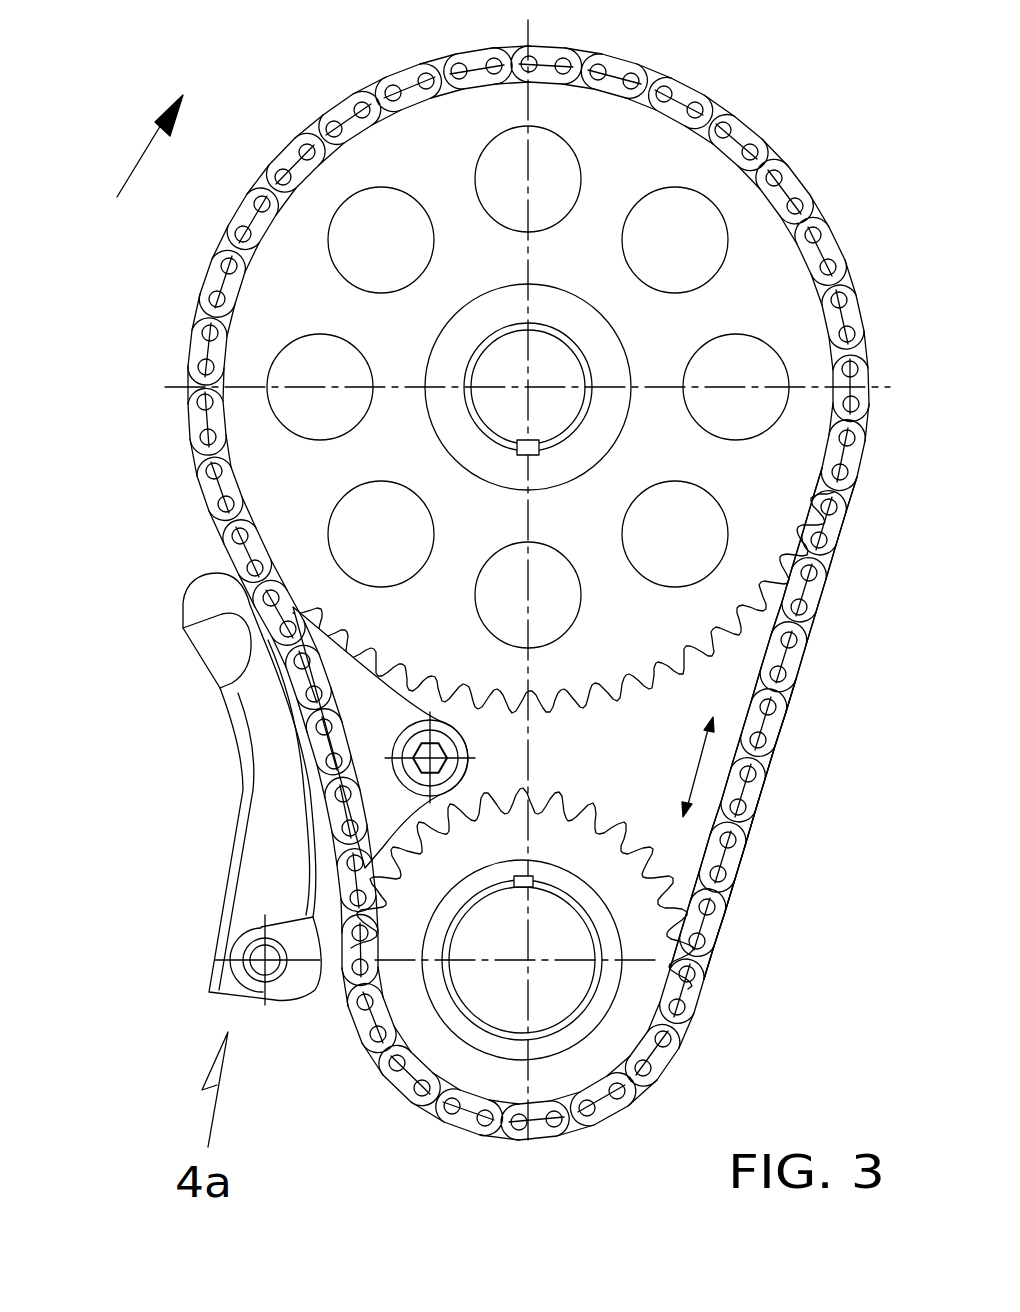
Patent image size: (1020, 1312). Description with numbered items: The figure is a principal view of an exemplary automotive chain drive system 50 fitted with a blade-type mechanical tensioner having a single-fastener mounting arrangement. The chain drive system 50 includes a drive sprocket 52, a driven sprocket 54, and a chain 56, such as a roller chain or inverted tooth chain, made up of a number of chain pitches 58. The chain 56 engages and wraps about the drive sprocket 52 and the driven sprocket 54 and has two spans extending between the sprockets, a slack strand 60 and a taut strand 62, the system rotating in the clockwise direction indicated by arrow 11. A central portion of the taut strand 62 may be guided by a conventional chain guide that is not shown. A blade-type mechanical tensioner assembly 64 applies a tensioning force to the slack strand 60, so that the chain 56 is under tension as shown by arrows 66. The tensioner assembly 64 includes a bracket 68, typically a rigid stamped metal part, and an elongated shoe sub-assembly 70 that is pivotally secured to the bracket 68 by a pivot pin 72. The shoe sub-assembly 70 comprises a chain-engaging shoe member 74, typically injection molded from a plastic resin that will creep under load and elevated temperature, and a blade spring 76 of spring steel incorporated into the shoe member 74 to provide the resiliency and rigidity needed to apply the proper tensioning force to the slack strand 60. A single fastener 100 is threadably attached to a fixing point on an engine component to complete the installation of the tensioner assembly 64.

The arrow 11 is at (133, 167).
The chain drive system 50 is at (812, 112).
The drive sprocket 52 is at (603, 826).
The driven sprocket 54 is at (584, 696).
The chain 56 is at (787, 697).
The chain pitches 58 is at (752, 812).
The slack strand 60 is at (348, 706).
The taut strand 62 is at (806, 762).
The tensioner assembly 64 is at (213, 780).
The arrows 66 is at (690, 773).
The bracket 68 is at (224, 897).
The shoe sub-assembly 70 is at (176, 585).
The pivot pin 72 is at (243, 961).
The shoe member 74 is at (293, 984).
The blade spring 76 is at (303, 817).
The fastener 100 is at (458, 742).